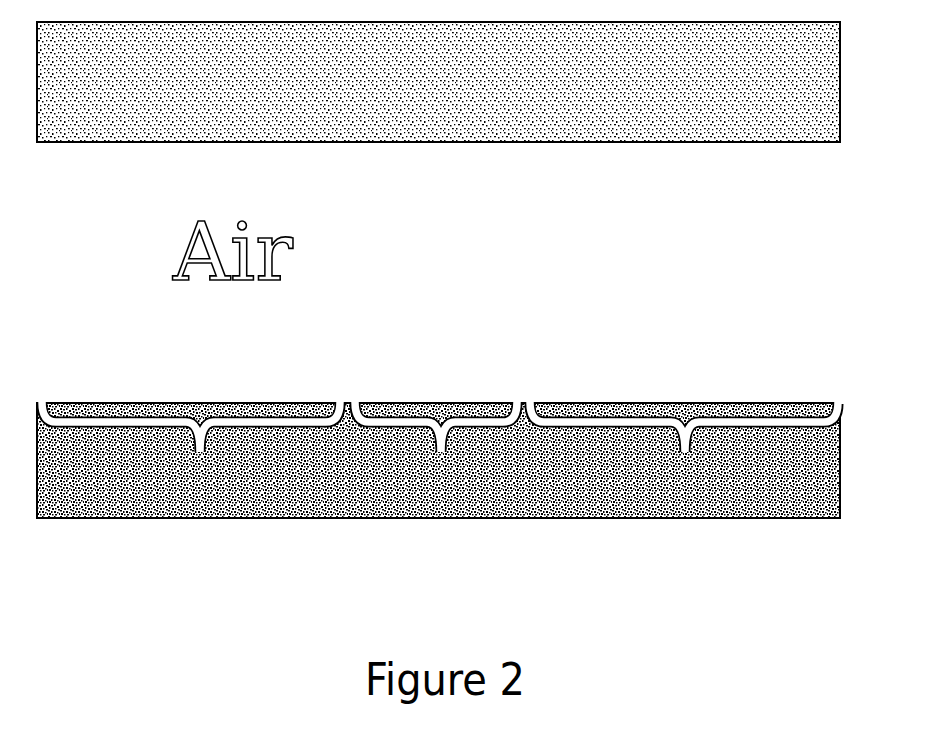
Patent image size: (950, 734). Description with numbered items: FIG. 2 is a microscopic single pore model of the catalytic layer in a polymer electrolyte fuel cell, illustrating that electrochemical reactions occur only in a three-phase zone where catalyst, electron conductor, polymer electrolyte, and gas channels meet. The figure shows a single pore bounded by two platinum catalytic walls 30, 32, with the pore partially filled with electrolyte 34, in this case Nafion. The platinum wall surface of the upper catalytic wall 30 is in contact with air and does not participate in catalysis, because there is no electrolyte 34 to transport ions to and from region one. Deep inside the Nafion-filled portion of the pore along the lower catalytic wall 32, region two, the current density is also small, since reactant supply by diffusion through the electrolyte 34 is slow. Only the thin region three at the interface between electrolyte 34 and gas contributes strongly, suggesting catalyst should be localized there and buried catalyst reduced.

The catalytic wall 30 is at (110, 144).
The catalytic wall 32 is at (113, 402).
The electrolyte 34 is at (700, 294).